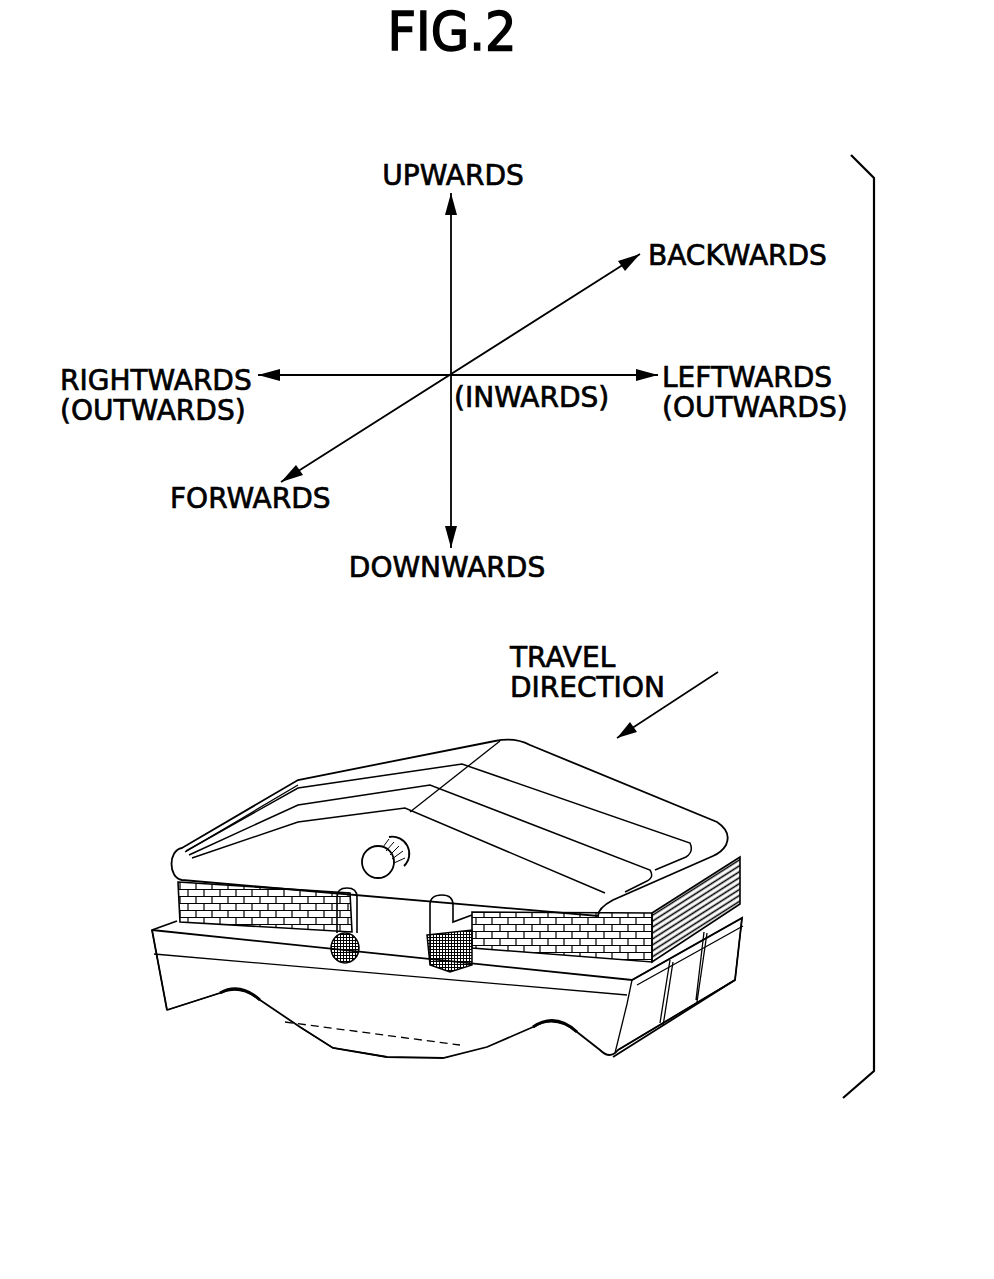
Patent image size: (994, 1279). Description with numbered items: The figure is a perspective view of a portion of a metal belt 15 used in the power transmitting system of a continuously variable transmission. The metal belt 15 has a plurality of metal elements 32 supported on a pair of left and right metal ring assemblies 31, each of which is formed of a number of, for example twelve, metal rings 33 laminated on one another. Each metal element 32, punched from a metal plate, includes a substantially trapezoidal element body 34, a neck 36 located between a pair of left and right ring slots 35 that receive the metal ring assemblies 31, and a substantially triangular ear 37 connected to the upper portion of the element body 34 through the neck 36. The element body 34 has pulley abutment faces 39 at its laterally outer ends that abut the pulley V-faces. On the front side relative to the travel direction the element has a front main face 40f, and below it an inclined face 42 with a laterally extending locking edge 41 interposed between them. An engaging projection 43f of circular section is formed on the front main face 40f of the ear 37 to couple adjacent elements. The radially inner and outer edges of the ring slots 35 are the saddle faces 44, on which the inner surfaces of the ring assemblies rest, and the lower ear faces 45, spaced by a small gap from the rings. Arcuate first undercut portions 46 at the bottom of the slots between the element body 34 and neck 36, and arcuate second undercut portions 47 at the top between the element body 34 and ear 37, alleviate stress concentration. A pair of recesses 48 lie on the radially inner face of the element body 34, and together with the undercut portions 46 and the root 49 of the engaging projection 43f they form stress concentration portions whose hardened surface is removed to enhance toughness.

The metal belt 15 is at (457, 728).
The metal ring assembly 31 is at (708, 870).
The metal element 32 is at (428, 1072).
The metal ring 33 is at (178, 918).
The element body 34 is at (193, 993).
The ring slot 35 is at (297, 940).
The neck 36 is at (362, 960).
The ear 37 is at (278, 845).
The pulley abutment face 39 is at (635, 1038).
The front main face 40f is at (410, 933).
The locking edge 41 is at (514, 992).
The inclined face 42 is at (400, 1018).
The engaging projection 43f is at (375, 862).
The saddle face 44 is at (175, 922).
The lower ear face 45 is at (250, 907).
The first undercut portion 46 is at (333, 963).
The second undercut portion 47 is at (335, 893).
The recess 48 is at (237, 1000).
The root 49 is at (413, 854).